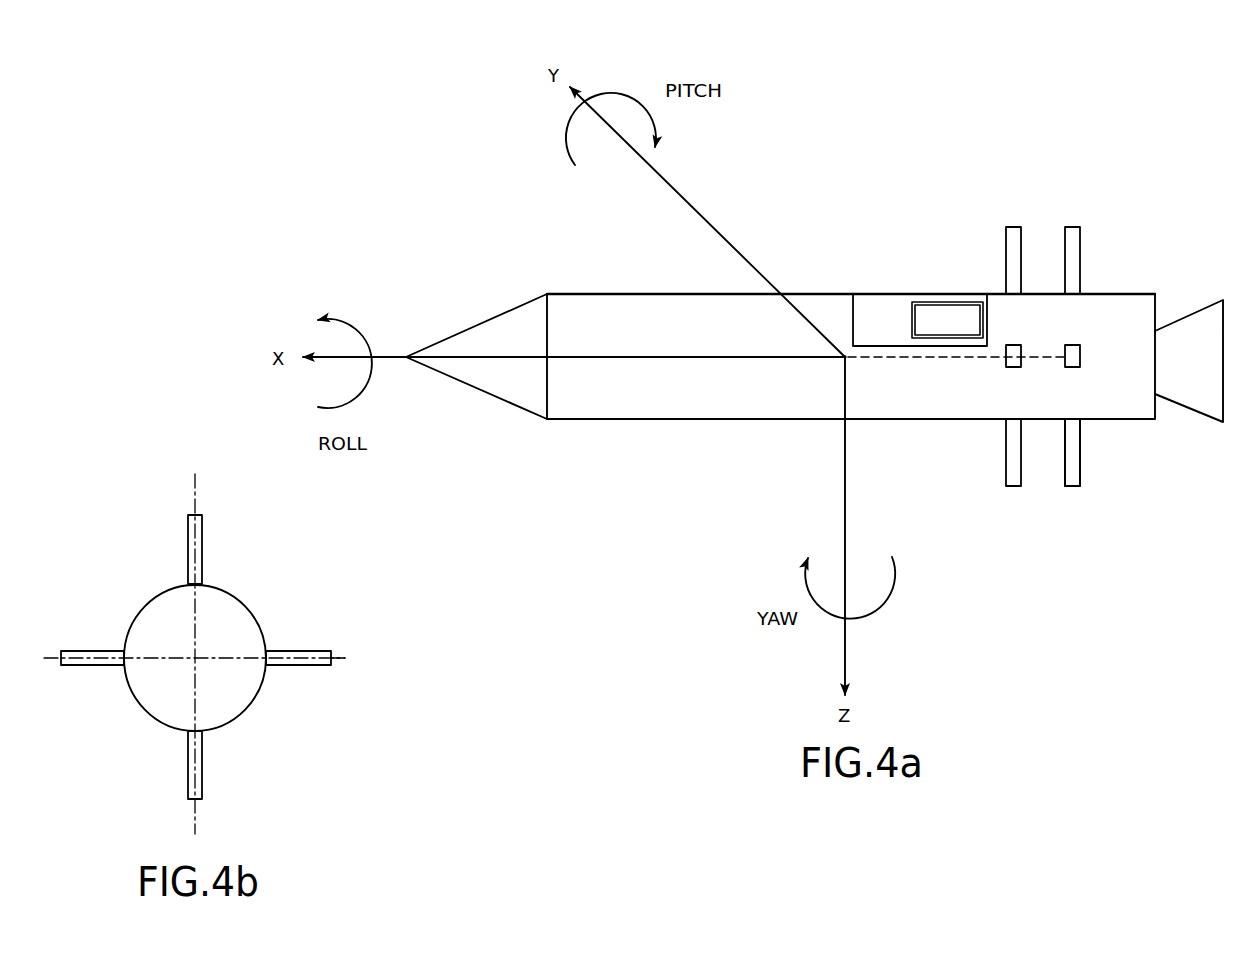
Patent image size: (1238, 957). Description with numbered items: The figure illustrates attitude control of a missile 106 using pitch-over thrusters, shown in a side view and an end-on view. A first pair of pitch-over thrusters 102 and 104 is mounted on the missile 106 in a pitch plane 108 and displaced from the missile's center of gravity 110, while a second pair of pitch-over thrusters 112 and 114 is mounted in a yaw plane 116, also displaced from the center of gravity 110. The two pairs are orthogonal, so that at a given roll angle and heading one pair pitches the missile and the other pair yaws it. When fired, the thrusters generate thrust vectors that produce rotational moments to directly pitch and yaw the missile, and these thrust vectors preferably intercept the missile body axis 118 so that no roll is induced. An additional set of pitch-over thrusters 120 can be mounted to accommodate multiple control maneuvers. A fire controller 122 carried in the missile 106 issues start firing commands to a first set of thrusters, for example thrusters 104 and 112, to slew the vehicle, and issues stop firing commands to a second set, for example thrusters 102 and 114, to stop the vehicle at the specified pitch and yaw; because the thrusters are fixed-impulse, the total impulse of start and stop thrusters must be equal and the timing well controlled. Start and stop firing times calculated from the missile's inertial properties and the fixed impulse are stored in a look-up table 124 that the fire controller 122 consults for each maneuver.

In FIG. 4A, the pitch-over thruster 102 is at (1007, 253).
In FIG. 4B, the pitch-over thruster 102 is at (158, 549).
In FIG. 4A, the pitch-over thruster 104 is at (1006, 466).
In FIG. 4B, the pitch-over thruster 104 is at (162, 765).
In FIG. 4A, the missile 106 is at (814, 391).
In FIG. 4B, the missile 106 is at (225, 668).
In FIG. 4B, the pitch plane 108 is at (194, 657).
In FIG. 4A, the center of gravity 110 is at (800, 408).
In FIG. 4A, the pitch-over thruster 112 is at (1011, 373).
In FIG. 4B, the pitch-over thruster 112 is at (92, 628).
In FIG. 4B, the pitch-over thruster 114 is at (310, 629).
In FIG. 4B, the yaw plane 116 is at (375, 638).
In FIG. 4A, the missile body axis 118 is at (956, 384).
In FIG. 4A, the additional set of pitch-over thrusters 120 is at (1101, 474).
In FIG. 4A, the fire controller 122 is at (894, 297).
In FIG. 4A, the look-up table (LUT) 124 is at (947, 293).